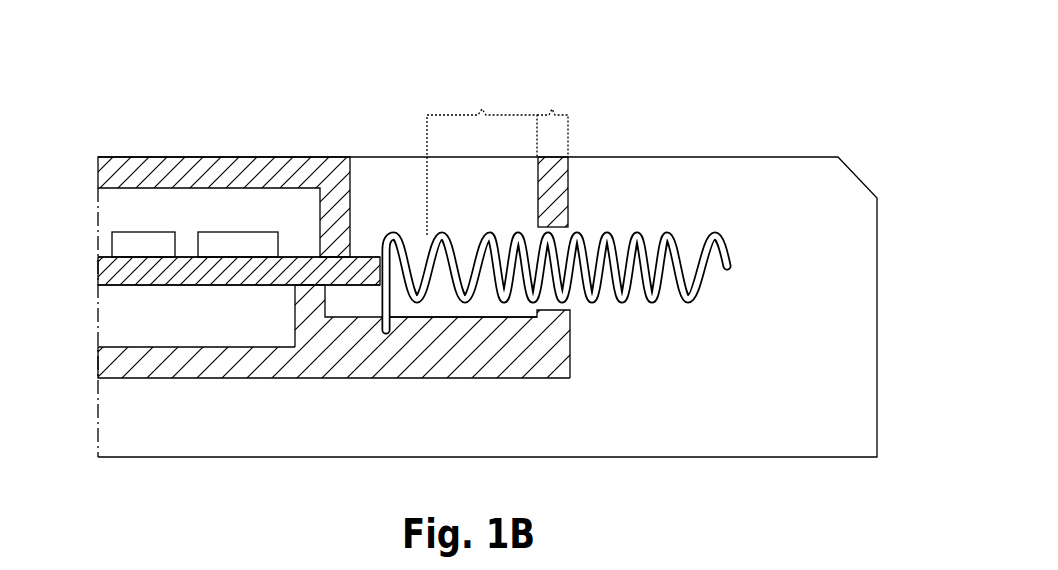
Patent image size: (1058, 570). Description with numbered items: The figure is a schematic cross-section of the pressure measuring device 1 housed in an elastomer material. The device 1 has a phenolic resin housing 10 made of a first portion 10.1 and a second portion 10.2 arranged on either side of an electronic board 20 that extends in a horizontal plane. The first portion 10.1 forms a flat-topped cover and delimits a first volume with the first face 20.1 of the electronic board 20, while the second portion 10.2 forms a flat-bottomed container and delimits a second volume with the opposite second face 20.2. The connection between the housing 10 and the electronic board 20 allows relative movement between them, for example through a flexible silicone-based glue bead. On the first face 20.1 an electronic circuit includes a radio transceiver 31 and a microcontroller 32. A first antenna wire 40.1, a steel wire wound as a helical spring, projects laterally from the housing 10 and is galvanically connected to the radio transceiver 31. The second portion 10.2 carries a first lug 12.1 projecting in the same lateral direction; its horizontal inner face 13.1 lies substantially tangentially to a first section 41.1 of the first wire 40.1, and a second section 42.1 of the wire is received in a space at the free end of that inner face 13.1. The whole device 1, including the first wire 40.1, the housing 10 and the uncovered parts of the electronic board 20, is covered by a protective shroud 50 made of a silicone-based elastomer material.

The pressure measuring device 1 is at (868, 138).
The housing 10 is at (103, 171).
The first portion of the housing 10.1 is at (214, 157).
The second portion of the housing 10.2 is at (167, 368).
The first lug 12.1 is at (450, 370).
The horizontal inner face 13.1 is at (453, 322).
The electronic board 20 is at (103, 271).
The first face of the electronic board 20.1 is at (100, 258).
The second face of the electronic board 20.2 is at (102, 286).
The radio transceiver 31 is at (262, 240).
The microcontroller 32 is at (142, 240).
The first antenna wire 40.1 is at (724, 255).
The first section of the first wire 41.1 is at (482, 159).
The second section of the first wire 42.1 is at (556, 155).
The protective shroud 50 is at (860, 370).